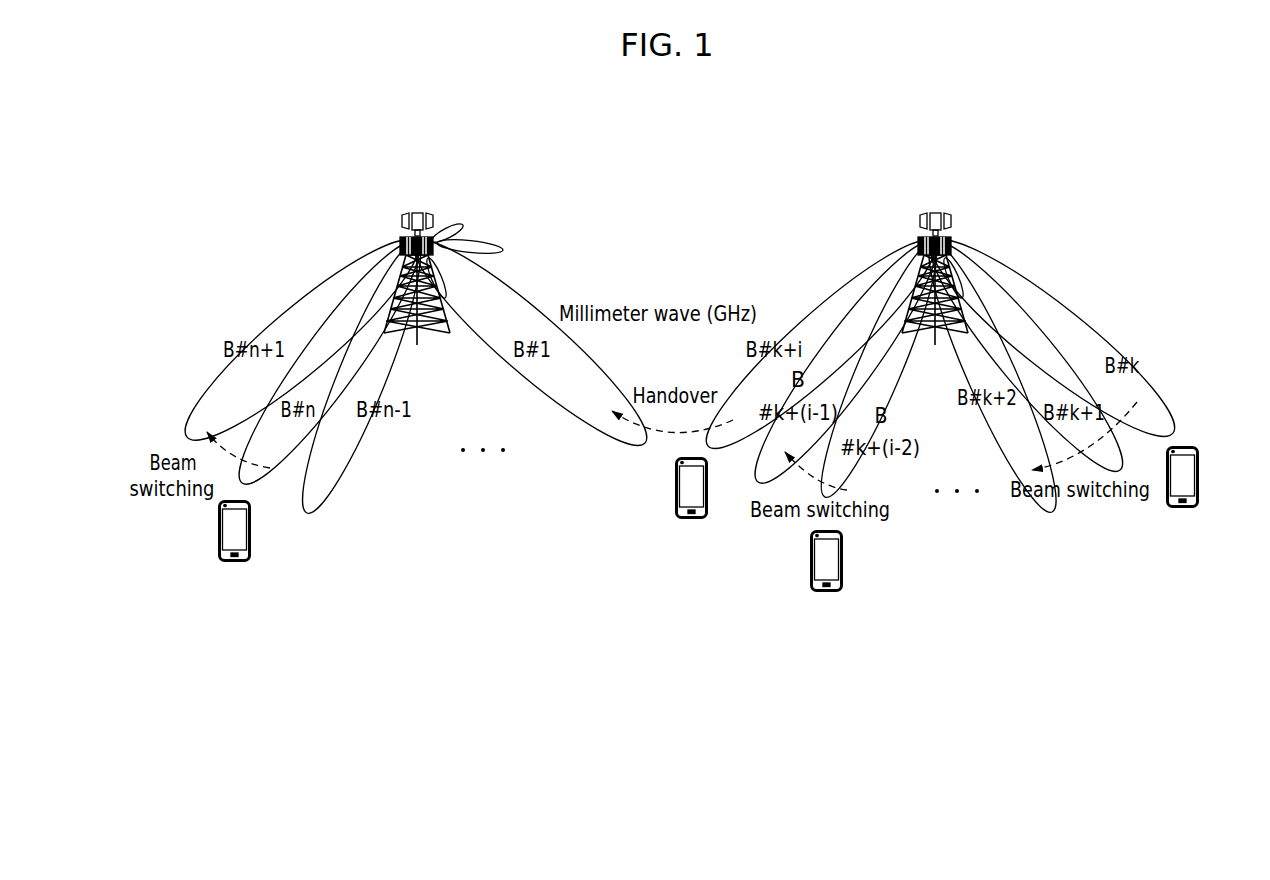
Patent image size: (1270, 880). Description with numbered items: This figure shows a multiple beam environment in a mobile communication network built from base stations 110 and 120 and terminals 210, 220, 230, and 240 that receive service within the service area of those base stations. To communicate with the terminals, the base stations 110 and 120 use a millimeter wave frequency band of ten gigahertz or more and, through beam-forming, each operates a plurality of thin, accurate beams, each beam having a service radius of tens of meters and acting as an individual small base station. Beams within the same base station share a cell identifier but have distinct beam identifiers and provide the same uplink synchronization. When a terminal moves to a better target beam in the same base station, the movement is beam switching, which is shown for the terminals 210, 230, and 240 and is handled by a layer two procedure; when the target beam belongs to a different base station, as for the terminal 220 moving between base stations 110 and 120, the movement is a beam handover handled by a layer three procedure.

The base station 110 is at (415, 211).
The base station 120 is at (933, 211).
The terminal 210 is at (235, 562).
The terminal 220 is at (691, 521).
The terminal 230 is at (826, 594).
The terminal 240 is at (1183, 510).